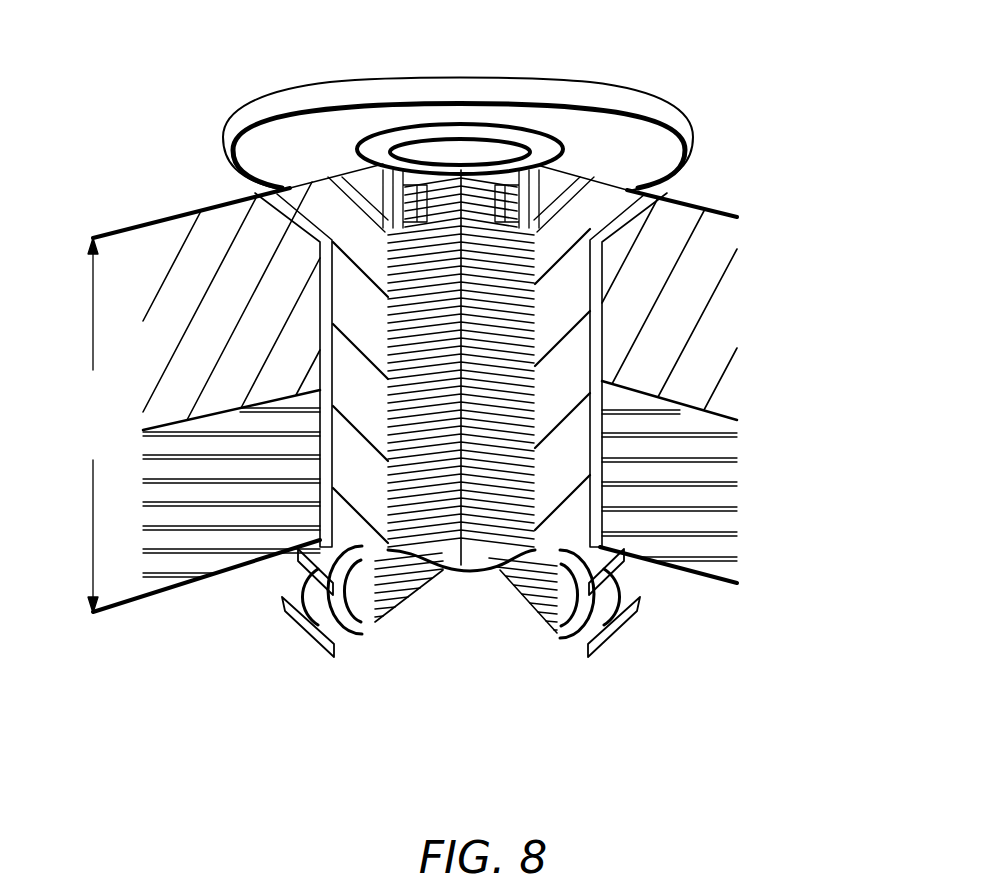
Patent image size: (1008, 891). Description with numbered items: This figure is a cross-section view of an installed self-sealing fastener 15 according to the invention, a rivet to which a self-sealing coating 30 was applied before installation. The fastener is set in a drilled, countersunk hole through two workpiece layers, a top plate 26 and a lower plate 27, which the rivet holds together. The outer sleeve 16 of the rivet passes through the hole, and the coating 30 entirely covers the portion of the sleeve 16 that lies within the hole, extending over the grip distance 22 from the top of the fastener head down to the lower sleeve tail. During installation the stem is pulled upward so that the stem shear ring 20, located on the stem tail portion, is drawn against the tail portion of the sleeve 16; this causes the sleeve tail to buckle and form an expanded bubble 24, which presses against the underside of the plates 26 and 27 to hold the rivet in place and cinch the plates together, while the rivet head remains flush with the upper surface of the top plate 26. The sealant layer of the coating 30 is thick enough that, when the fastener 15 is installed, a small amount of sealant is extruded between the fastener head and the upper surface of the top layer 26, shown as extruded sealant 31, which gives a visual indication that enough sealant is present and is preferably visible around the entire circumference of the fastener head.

The fastener 15 is at (288, 169).
The sleeve 16 is at (443, 537).
The stem shear ring 20 is at (548, 638).
The grip distance 22 is at (95, 425).
The expanded bubble 24 is at (283, 613).
The top plate 26 is at (213, 238).
The lower plate 27 is at (712, 470).
The self-sealing coating 30 is at (592, 383).
The extruded sealant 31 is at (565, 97).